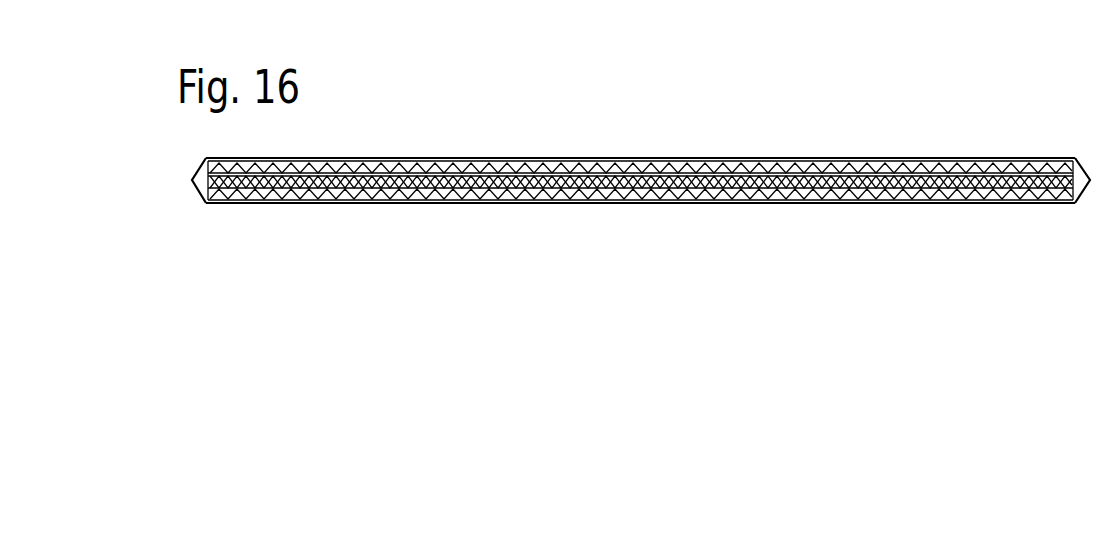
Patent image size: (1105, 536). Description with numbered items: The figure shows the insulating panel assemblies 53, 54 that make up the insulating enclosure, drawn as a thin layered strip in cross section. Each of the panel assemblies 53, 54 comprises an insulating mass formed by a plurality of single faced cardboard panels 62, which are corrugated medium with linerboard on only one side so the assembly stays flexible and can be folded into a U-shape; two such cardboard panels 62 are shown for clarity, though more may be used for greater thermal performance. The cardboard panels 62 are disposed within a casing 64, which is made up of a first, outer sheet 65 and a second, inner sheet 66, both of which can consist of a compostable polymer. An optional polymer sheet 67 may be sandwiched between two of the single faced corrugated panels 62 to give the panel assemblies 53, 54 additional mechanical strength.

The insulating panel assembly 53 is at (640, 117).
The insulating panel assembly 54 is at (640, 187).
The single faced cardboard panel 62 is at (253, 197).
The casing 64 is at (781, 155).
The first, outer sheet 65 is at (618, 158).
The second/inner sheet 66 is at (628, 203).
The polymer sheet 67 is at (196, 182).